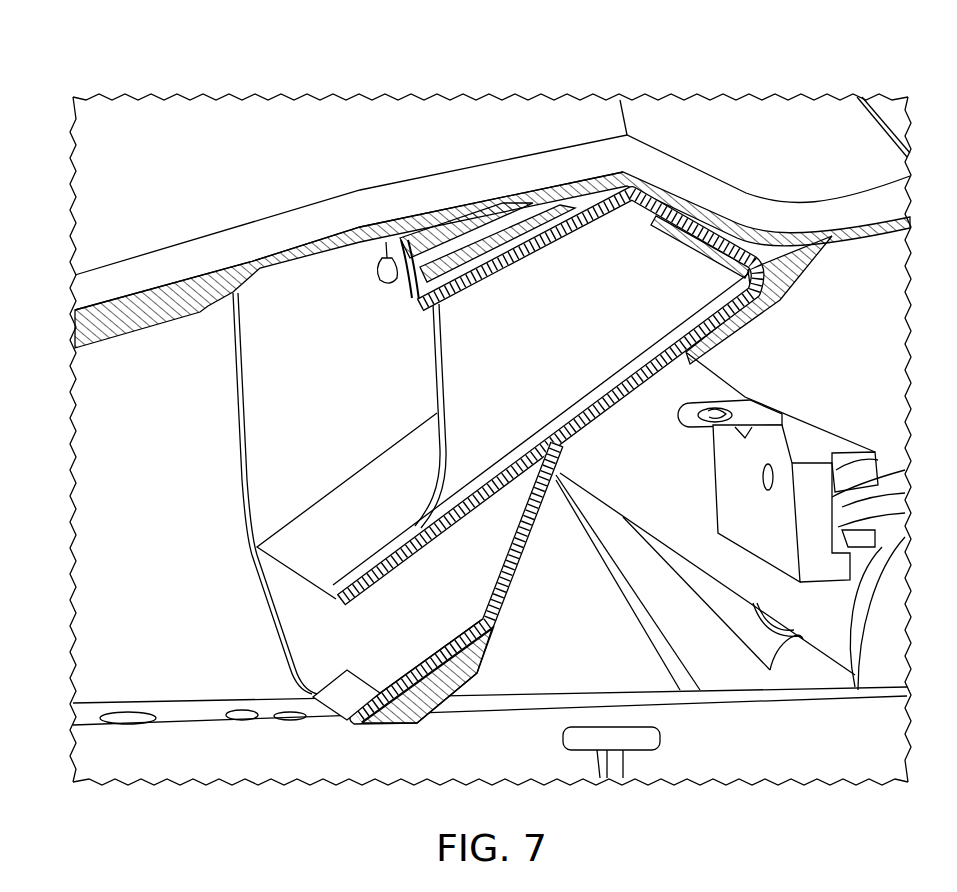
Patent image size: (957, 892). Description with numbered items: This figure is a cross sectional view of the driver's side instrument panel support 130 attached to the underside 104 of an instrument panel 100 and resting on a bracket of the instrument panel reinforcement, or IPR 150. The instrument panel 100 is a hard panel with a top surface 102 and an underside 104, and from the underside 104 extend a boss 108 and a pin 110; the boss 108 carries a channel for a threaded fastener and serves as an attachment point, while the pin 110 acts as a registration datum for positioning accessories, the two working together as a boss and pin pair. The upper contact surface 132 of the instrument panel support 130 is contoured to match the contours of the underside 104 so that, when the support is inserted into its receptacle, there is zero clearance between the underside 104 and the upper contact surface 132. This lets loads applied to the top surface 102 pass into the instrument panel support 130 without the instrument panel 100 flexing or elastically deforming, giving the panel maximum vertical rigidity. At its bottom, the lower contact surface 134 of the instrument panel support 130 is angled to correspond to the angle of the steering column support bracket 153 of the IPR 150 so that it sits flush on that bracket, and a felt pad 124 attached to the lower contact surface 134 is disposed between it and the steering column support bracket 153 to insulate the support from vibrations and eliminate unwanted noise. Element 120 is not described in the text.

The instrument panel 100 is at (252, 70).
The top surface 102 is at (477, 113).
The underside 104 is at (867, 238).
The boss 108 is at (410, 287).
The pin 110 is at (379, 268).
The channel bracket 120 is at (745, 300).
The felt pad 124 is at (337, 677).
The driver's side instrument panel support 130 is at (258, 487).
The upper contact surface 132 is at (724, 222).
The lower contact surface 134 is at (366, 722).
The IPR 150 is at (633, 408).
The steering column support bracket 153 is at (172, 710).